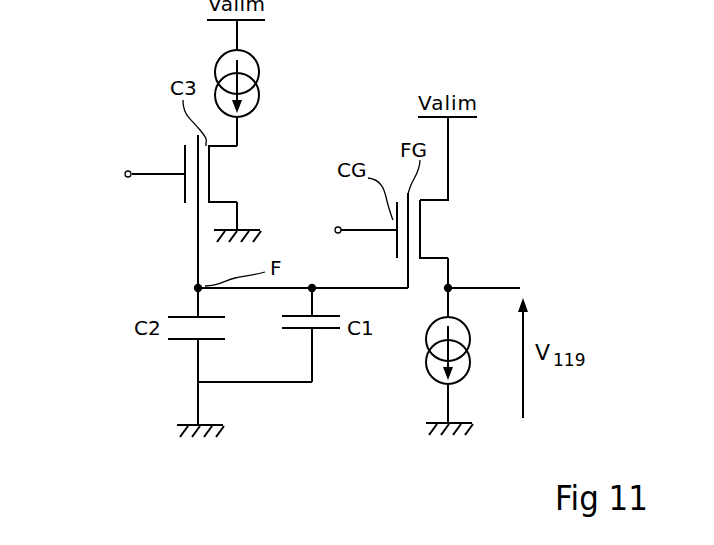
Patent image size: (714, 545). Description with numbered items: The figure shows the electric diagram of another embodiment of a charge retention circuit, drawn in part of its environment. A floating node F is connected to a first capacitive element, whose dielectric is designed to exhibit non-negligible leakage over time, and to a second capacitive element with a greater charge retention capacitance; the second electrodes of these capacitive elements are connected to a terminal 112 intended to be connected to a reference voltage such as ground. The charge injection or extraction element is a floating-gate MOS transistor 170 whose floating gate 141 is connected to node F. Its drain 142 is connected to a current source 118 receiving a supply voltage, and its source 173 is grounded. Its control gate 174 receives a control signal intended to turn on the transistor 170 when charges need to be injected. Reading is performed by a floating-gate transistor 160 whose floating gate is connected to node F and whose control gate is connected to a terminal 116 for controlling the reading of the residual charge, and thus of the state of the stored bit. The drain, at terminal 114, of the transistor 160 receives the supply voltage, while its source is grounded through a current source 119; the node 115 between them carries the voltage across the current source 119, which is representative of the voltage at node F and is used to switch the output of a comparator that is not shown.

The terminal 112 is at (198, 403).
The drain terminal 114 is at (448, 170).
The output node 115 is at (450, 287).
The terminal 116 is at (338, 227).
The current source 118 is at (260, 70).
The current source 119 is at (427, 363).
The floating gate 141 is at (197, 254).
The drain 142 is at (238, 133).
The floating-gate transistor 160 is at (432, 233).
The floating-gate MOS transistor 170 is at (228, 171).
The source 173 is at (237, 211).
The control gate 174 is at (150, 175).